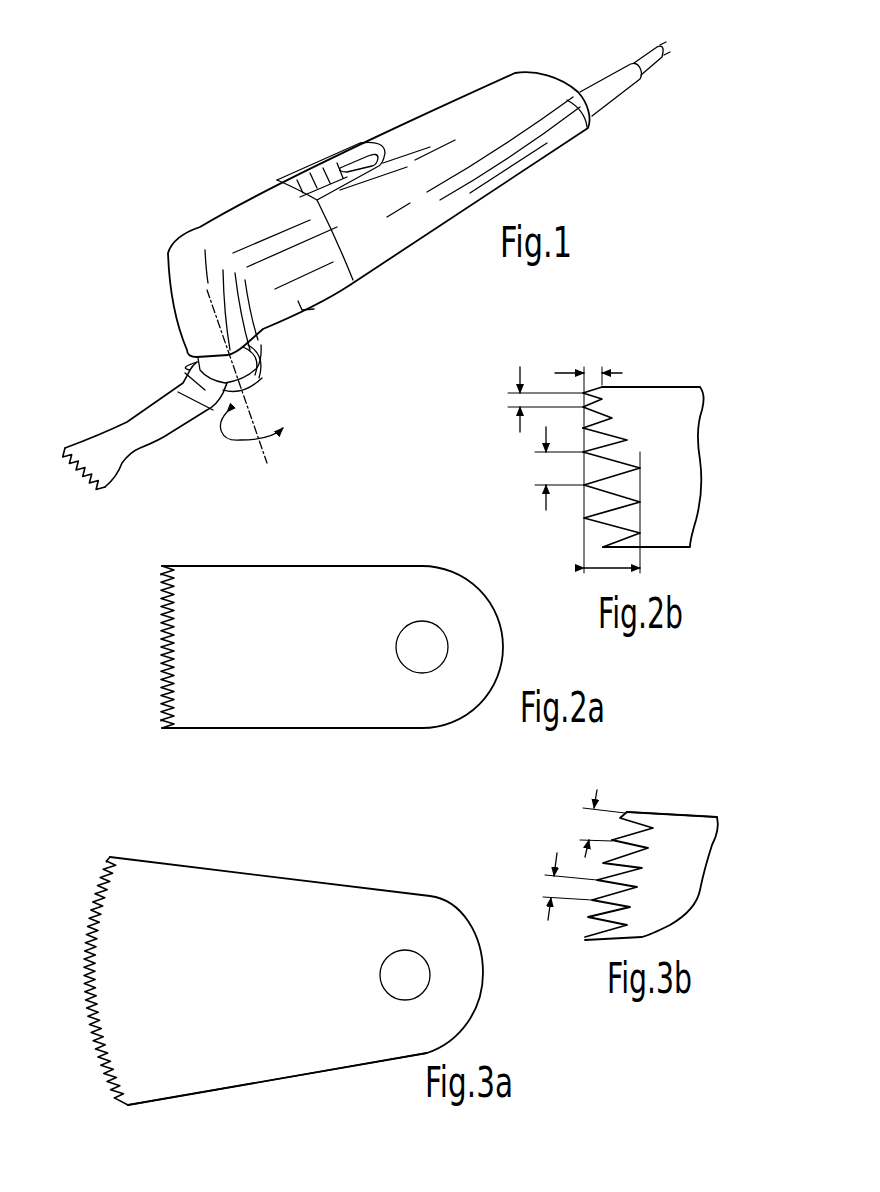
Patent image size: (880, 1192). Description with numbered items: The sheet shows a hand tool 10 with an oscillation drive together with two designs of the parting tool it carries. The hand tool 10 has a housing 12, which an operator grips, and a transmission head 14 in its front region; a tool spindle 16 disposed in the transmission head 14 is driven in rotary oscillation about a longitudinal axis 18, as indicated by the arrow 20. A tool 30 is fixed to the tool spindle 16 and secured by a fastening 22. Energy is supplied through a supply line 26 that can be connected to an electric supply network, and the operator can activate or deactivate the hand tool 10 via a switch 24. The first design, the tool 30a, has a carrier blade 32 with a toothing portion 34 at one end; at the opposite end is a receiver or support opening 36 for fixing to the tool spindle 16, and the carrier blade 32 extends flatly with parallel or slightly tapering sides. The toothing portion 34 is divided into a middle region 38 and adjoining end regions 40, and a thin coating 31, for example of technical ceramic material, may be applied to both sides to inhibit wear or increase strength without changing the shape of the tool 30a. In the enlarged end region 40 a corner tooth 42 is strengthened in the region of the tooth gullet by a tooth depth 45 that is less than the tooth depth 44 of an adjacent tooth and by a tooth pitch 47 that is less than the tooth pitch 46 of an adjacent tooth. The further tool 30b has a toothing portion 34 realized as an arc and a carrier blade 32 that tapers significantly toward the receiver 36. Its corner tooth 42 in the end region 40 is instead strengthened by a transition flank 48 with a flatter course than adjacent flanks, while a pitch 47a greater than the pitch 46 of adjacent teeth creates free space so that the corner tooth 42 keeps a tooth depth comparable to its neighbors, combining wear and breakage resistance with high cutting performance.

In FIG. 1, the hand tool 10 is at (297, 125).
In FIG. 1, the housing 12 is at (462, 130).
In FIG. 1, the transmission head 14 is at (240, 218).
In FIG. 1, the tool spindle 16 is at (264, 333).
In FIG. 1, the longitudinal axis 18 is at (250, 408).
In FIG. 1, the arrow 20 is at (250, 418).
In FIG. 1, the fastening 22 is at (262, 375).
In FIG. 1, the switch 24 is at (362, 160).
In FIG. 1, the supply line 26 is at (602, 88).
In FIG. 1, the tool 30 is at (128, 442).
In FIG. 2A, the tool 30a is at (211, 558).
In FIG. 2B, the tool 30a is at (682, 388).
In FIG. 3A, the tool 30b is at (256, 860).
In FIG. 3B, the tool 30b is at (710, 812).
In FIG. 2A, the coating 31 is at (310, 612).
In FIG. 3A, the coating 31 is at (308, 918).
In FIG. 2A, the carrier blade 32 is at (272, 566).
In FIG. 3A, the carrier blade 32 is at (297, 1077).
In FIG. 2A, the toothing portion 34 is at (178, 662).
In FIG. 3A, the toothing portion 34 is at (103, 993).
In FIG. 2A, the receiver or support opening 36 is at (418, 658).
In FIG. 3A, the receiver or support opening 36 is at (415, 979).
In FIG. 2A, the middle region 38 is at (157, 652).
In FIG. 3A, the middle region 38 is at (82, 990).
In FIG. 2A, the end region 40 is at (160, 575).
In FIG. 2B, the end region 40 is at (583, 395).
In FIG. 3A, the end region 40 is at (108, 858).
In FIG. 3B, the end region 40 is at (590, 839).
In FIG. 2B, the corner tooth 42 is at (603, 388).
In FIG. 3B, the corner tooth 42 is at (640, 812).
In FIG. 2B, the tooth depth 44 is at (607, 567).
In FIG. 2B, the tooth depth 45 is at (593, 370).
In FIG. 2B, the tooth pitch 46 is at (540, 470).
In FIG. 3B, the tooth pitch 46 is at (545, 885).
In FIG. 2B, the tooth pitch 47 is at (518, 395).
In FIG. 3B, the pitch 47a is at (585, 820).
In FIG. 3B, the transition flank 48 is at (620, 818).